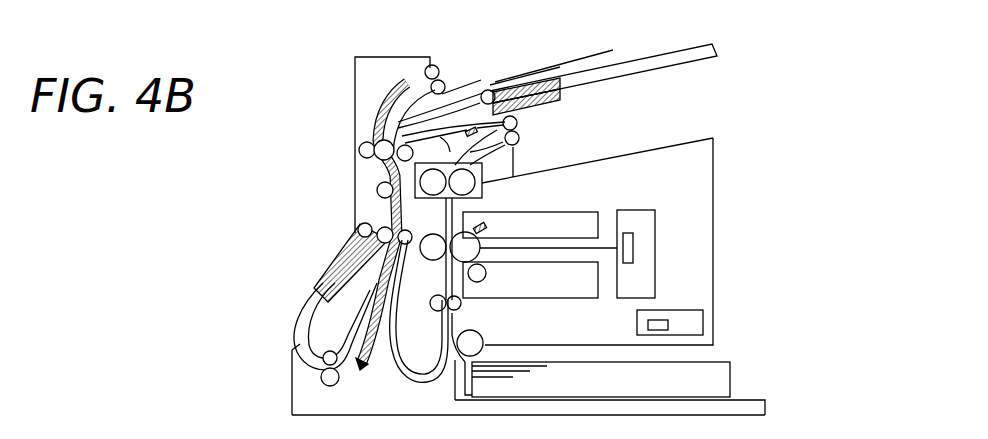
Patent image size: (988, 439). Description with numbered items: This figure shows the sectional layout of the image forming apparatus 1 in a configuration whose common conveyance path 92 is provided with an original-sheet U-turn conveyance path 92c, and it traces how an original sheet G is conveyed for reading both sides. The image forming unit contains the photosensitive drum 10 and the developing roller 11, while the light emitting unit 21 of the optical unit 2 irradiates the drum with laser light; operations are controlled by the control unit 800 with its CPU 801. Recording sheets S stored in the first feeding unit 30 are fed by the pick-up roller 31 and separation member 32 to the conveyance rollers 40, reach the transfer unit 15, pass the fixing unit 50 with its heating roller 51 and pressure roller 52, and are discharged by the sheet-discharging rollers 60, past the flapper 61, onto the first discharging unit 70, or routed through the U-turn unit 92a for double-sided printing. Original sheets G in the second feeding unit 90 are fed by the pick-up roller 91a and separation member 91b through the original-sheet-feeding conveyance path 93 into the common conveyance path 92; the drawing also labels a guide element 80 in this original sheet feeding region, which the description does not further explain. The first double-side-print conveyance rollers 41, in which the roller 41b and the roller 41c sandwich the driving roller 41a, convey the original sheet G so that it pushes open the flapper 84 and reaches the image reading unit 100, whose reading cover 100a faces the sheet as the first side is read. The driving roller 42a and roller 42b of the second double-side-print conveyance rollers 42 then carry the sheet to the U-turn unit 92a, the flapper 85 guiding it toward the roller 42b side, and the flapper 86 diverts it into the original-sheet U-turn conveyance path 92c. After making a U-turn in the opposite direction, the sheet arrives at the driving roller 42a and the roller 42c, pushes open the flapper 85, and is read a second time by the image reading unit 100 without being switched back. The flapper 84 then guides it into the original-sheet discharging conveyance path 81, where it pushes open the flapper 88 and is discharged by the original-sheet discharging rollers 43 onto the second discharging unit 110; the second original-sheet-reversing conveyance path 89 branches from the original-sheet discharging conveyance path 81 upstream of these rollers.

The image forming apparatus 1 is at (713, 190).
The optical unit 2 is at (642, 210).
The photosensitive drum 10 is at (490, 229).
The developing roller 11 is at (483, 275).
The transfer unit 15 is at (437, 258).
The light emitting unit 21 is at (633, 240).
The first feeding unit 30 is at (752, 403).
The pick-up roller 31 is at (473, 338).
The separation member 32 is at (455, 388).
The conveyance rollers 40 is at (462, 303).
The first double-side-print conveyance rollers 41 is at (290, 64).
The driving roller 41a is at (398, 110).
The roller 41b is at (405, 86).
The roller 41c is at (387, 143).
The second double-side-print conveyance rollers 42 is at (250, 228).
The driving roller 42a is at (345, 256).
The roller 42b is at (330, 277).
The roller 42c is at (358, 232).
The original-sheet discharging rollers 43 is at (432, 65).
The fixing unit 50 is at (518, 175).
The heating roller 51 is at (475, 182).
The pressure roller 52 is at (442, 167).
The sheet-discharging rollers 60 is at (518, 126).
The flapper 61 is at (513, 160).
The first discharging unit 70 is at (668, 146).
The document conveying path 80 is at (447, 115).
The original-sheet discharging conveyance path 81 is at (378, 112).
The flapper 84 is at (383, 173).
The flapper 85 is at (374, 218).
The flapper 86 is at (358, 372).
The flapper 88 is at (403, 100).
The second original-sheet-reversing conveyance path 89 is at (393, 97).
The second feeding unit 90 is at (645, 62).
The pick-up roller 91a is at (500, 93).
The separation member 91b is at (510, 100).
The common conveyance path 92 is at (402, 186).
The U-turn unit 92a is at (392, 365).
The original-sheet U-turn conveyance path 92c is at (300, 350).
The original-sheet-feeding conveyance path 93 is at (490, 90).
The image reading unit 100 is at (371, 200).
The reading cover 100a is at (378, 190).
The second discharging unit 110 is at (587, 57).
The control unit 800 is at (690, 310).
The CPU 801 is at (668, 324).
The original sheet G is at (688, 52).
The recording sheet S is at (730, 365).